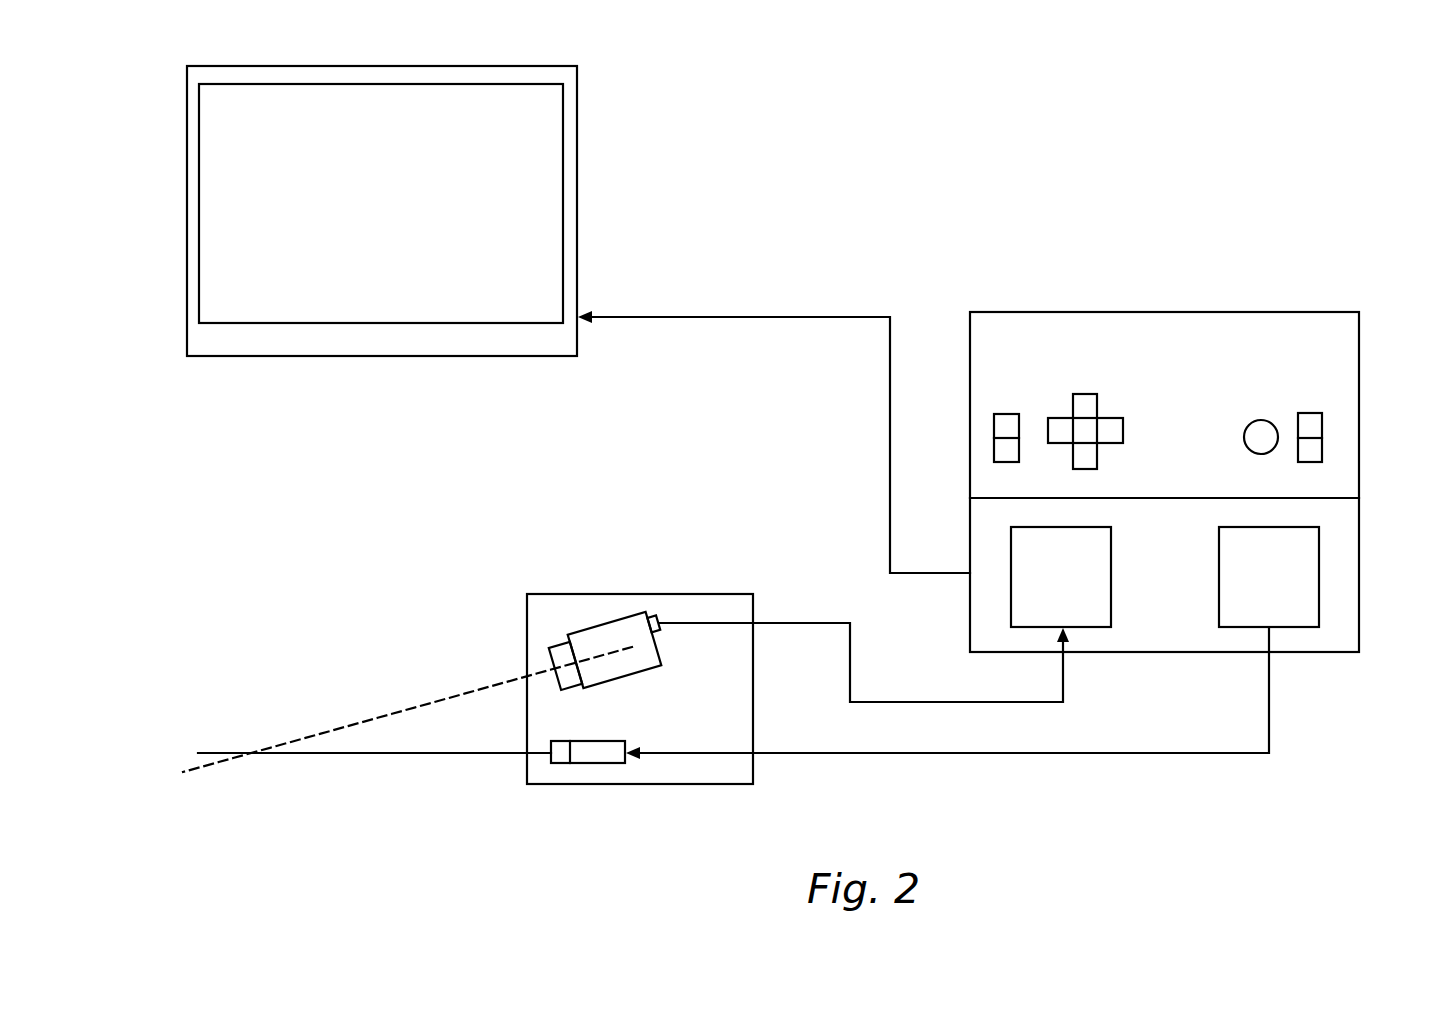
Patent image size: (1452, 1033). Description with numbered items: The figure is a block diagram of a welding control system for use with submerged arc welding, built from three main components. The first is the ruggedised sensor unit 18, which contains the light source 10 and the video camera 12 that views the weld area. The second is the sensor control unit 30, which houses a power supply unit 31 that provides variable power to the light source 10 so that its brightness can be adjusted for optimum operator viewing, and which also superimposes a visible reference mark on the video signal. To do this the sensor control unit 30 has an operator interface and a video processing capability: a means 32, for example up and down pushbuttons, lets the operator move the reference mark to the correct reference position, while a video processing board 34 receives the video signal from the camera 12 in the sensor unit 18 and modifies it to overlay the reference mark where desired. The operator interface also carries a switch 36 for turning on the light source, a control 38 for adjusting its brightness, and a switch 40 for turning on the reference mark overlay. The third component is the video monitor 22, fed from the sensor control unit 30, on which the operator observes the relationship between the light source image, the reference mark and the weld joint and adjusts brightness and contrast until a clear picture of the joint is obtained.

The light source 10 is at (608, 764).
The video camera 12 is at (597, 623).
The ruggedised sensor unit 18 is at (703, 593).
The video monitor 22 is at (580, 190).
The sensor control unit 30 is at (1270, 308).
The power supply unit 31 is at (1319, 585).
The means for moving the reference mark 32 is at (1080, 392).
The video processing board 34 is at (1032, 602).
The switch 36 is at (1320, 432).
The control 38 is at (1268, 430).
The switch 40 is at (993, 428).